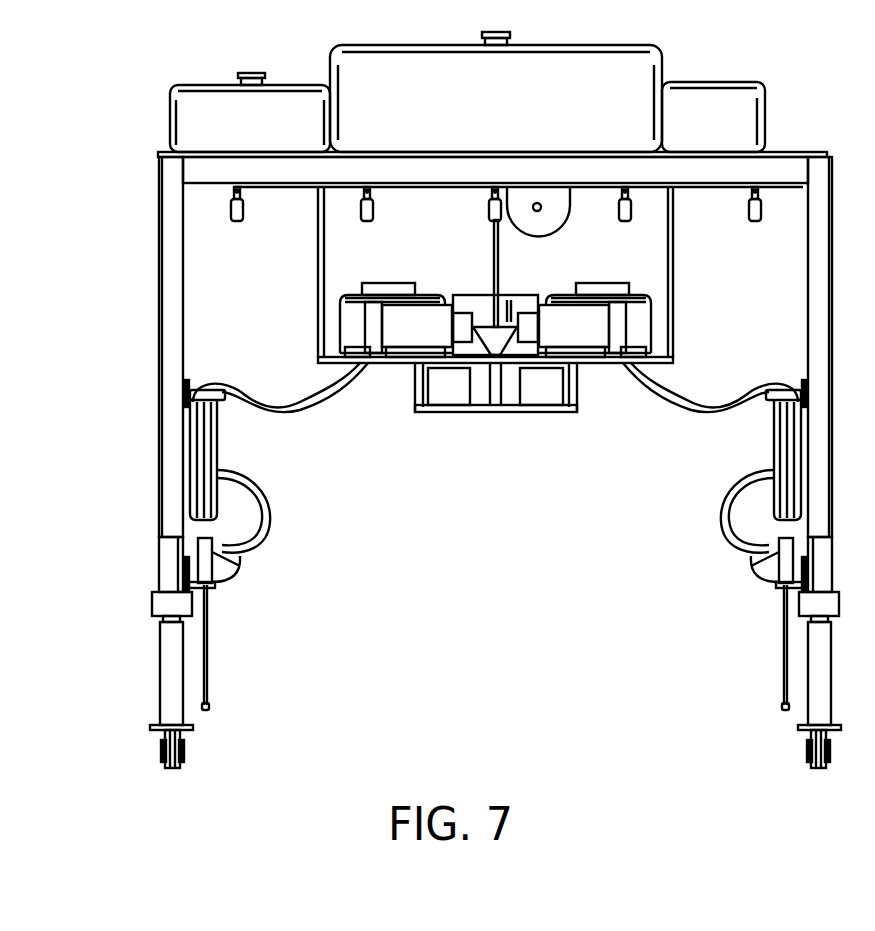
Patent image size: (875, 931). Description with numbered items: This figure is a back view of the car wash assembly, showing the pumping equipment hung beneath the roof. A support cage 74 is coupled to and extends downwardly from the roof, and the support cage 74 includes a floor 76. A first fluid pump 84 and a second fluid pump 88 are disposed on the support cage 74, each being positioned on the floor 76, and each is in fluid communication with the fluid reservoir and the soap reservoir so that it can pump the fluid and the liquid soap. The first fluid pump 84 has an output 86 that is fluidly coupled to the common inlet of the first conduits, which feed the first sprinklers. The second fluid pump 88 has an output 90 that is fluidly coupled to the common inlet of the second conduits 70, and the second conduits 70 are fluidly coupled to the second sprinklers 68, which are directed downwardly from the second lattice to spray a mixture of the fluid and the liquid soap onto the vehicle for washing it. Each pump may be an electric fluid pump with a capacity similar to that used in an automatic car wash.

The second sprinklers 68 is at (237, 221).
The second conduits 70 is at (288, 190).
The support cage 74 is at (670, 328).
The floor 76 is at (635, 367).
The first fluid pump 84 is at (410, 325).
The output 86 is at (473, 330).
The second fluid pump 88 is at (580, 325).
The output 90 is at (503, 323).